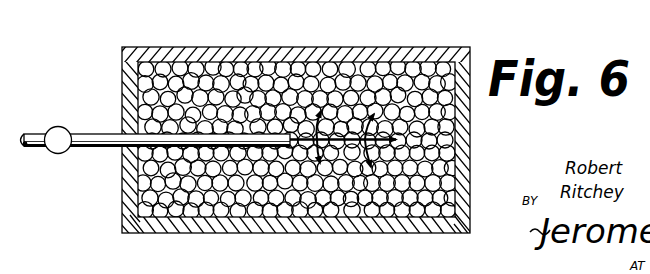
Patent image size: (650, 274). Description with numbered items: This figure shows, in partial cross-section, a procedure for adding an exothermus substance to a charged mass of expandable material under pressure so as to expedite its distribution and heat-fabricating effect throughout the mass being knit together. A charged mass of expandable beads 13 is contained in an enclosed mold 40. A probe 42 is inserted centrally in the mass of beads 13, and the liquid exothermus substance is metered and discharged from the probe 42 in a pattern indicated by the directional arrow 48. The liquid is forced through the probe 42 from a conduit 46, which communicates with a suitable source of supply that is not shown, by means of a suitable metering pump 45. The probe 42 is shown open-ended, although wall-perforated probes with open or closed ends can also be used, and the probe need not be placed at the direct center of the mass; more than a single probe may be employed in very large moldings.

The expandable beads 13 is at (438, 165).
The enclosed mold 40 is at (204, 52).
The probe 42 is at (96, 148).
The metering pump 45 is at (64, 127).
The conduit 46 is at (28, 150).
The directional arrow 48 is at (304, 152).